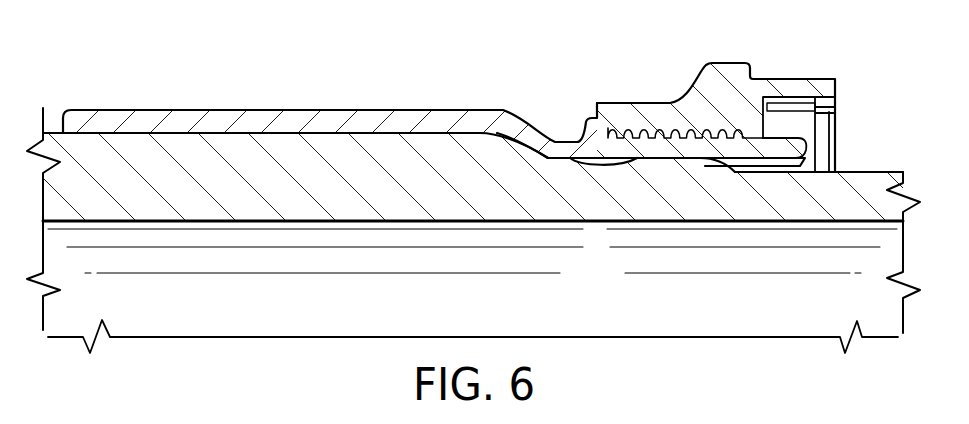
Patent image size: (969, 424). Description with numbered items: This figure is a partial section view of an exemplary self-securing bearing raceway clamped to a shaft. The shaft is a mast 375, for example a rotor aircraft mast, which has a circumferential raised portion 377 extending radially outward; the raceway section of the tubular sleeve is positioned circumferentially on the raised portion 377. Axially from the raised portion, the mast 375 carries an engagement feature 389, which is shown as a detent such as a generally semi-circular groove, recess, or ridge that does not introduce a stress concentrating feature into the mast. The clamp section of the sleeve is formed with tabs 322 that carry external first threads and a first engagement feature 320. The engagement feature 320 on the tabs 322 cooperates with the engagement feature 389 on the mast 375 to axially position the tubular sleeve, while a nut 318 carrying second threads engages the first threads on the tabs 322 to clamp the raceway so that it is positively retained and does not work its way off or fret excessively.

The nut 318 is at (695, 100).
The engagement feature 320 is at (603, 157).
The tab 322 is at (797, 140).
The mast 375 is at (873, 181).
The raised portion 377 is at (316, 165).
The engagement feature 389 is at (620, 168).